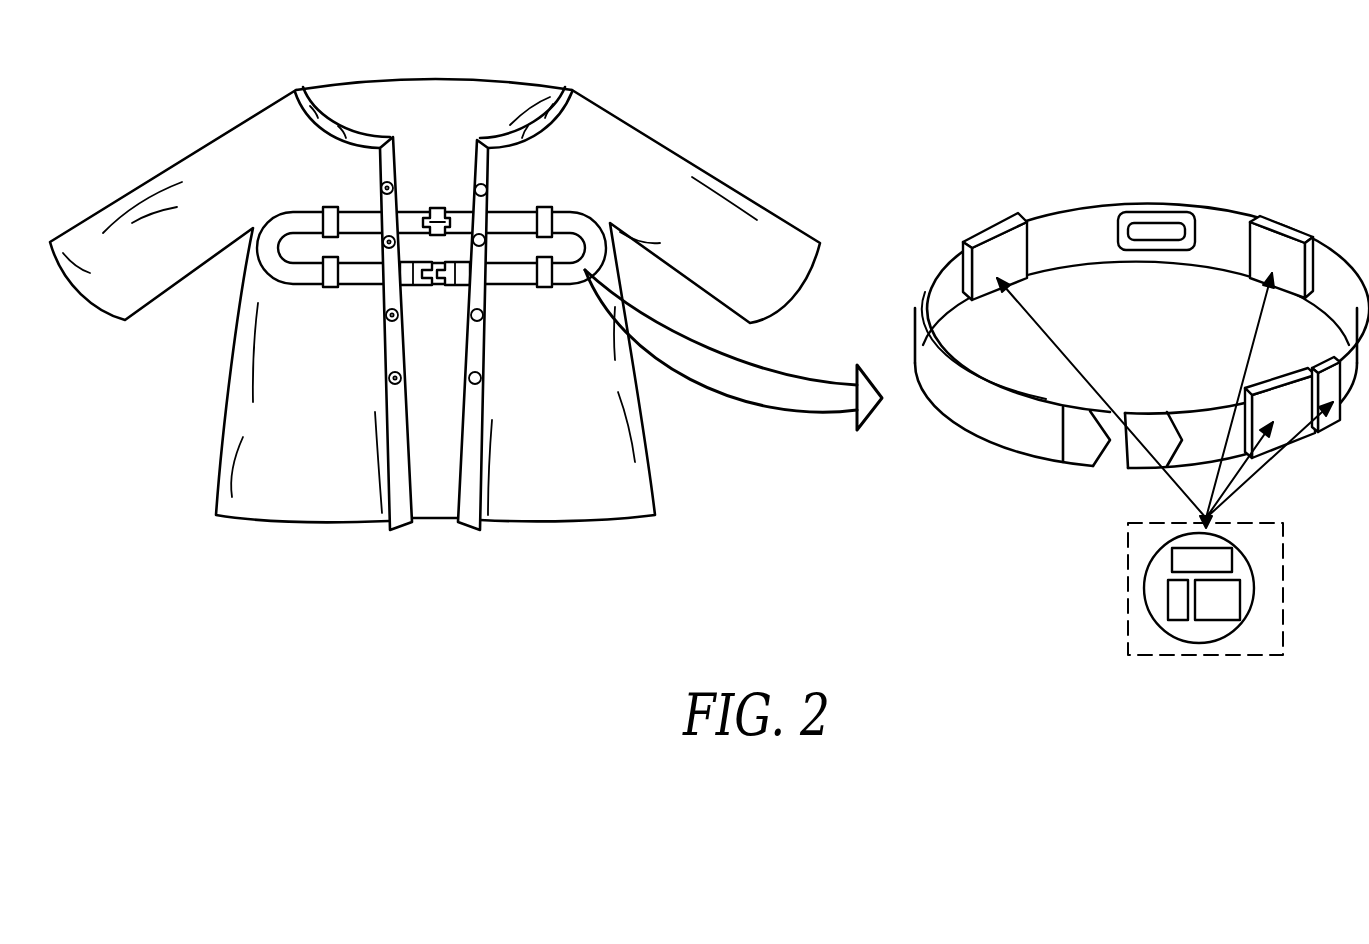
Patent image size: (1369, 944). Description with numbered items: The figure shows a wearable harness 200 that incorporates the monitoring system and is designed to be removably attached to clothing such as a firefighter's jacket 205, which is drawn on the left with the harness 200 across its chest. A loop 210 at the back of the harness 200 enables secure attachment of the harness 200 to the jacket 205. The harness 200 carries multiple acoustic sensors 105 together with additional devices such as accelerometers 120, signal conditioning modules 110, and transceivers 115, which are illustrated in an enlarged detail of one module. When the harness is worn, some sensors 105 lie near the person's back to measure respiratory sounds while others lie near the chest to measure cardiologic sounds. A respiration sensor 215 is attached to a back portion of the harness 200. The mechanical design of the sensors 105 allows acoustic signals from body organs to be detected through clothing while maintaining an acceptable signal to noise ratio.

The acoustic sensor 105 is at (1198, 627).
The signal conditioning module 110 is at (1232, 603).
The transceiver 115 is at (1178, 602).
The accelerometer 120 is at (1225, 563).
The wearable harness 200 is at (273, 268).
The firefighter's jacket 205 is at (607, 125).
The loop 210 is at (1157, 225).
The respiration sensor 215 is at (1003, 240).